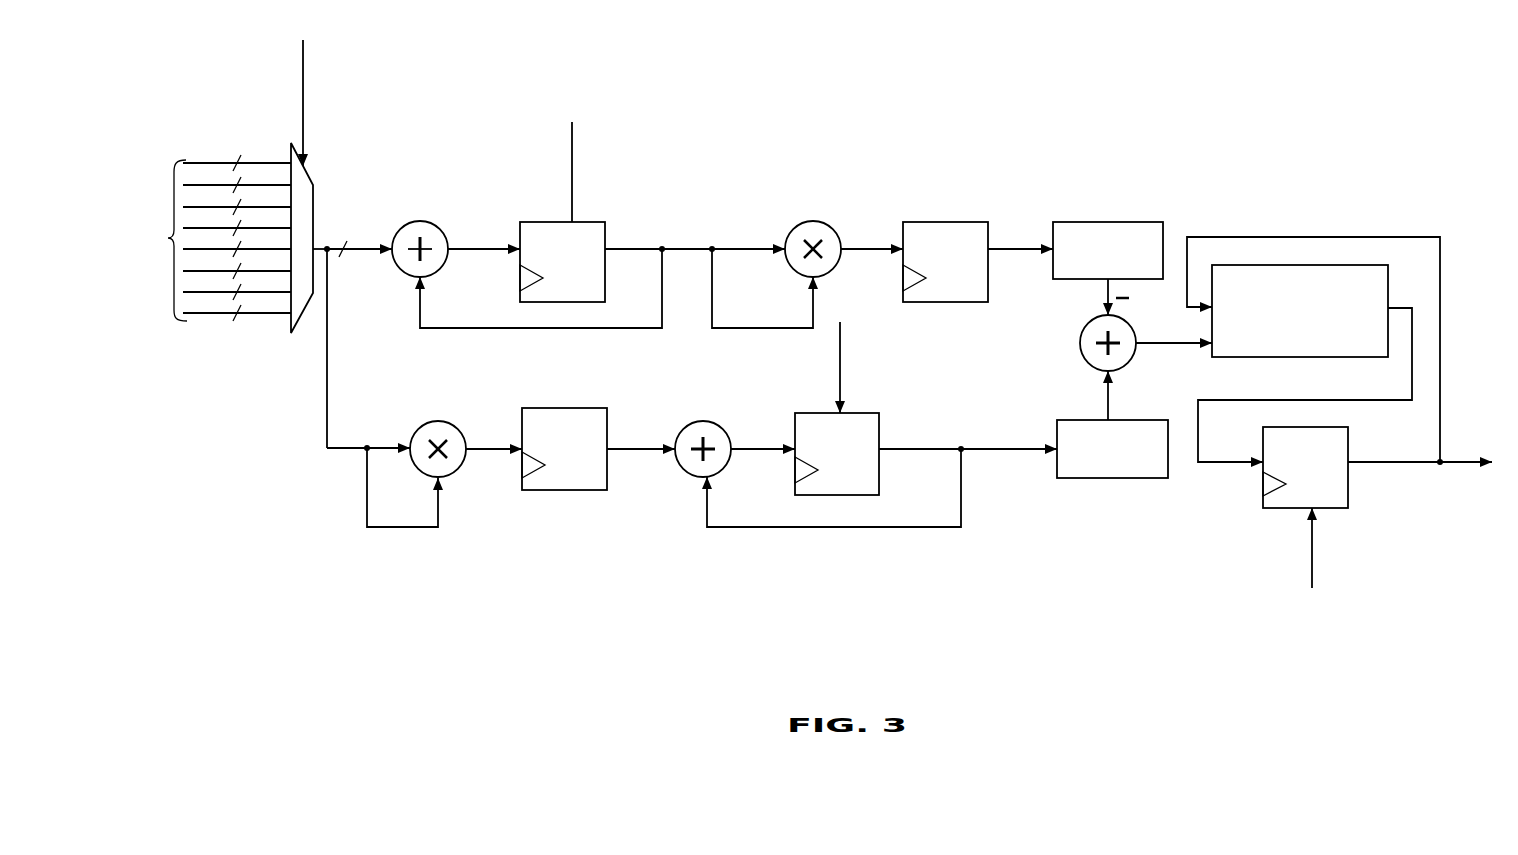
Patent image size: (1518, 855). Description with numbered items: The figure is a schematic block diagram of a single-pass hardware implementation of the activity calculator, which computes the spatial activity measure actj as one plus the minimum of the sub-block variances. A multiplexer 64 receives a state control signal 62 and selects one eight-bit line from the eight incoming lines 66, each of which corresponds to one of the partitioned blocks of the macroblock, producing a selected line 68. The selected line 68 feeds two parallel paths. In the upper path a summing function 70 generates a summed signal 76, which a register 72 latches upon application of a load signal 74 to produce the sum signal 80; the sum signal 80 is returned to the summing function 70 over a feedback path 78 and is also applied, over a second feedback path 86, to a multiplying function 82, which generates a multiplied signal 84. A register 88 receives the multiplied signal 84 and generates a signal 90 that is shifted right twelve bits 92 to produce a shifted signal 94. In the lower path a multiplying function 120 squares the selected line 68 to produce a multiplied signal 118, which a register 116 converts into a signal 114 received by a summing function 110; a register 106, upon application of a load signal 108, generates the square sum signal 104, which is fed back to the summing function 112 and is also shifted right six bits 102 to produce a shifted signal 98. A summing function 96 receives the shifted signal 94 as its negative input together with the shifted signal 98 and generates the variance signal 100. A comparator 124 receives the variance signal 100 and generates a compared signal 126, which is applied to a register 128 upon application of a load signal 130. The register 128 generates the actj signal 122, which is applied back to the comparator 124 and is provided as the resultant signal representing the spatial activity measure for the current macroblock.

The state control signal 62 is at (303, 80).
The multiplexer 64 is at (311, 176).
The incoming lines 66 is at (218, 232).
The selected line 68 is at (366, 248).
The summing function 70 is at (422, 222).
The register 72 is at (591, 222).
The load signal 74 is at (573, 131).
The summed signal 76 is at (475, 248).
The feedback line 78 is at (547, 329).
The sum signal 80 is at (733, 248).
The multiplying function 82 is at (814, 222).
The multiplied signal 84 is at (861, 248).
The multiplier feedback line 86 is at (782, 329).
The register 88 is at (968, 222).
The signal 90 is at (1004, 248).
The right shift by 12 bits 92 is at (1136, 222).
The shifted signal 94 is at (1107, 298).
The summing function 96 is at (1082, 340).
The shifted signal 98 is at (1107, 410).
The variance signal 100 is at (1153, 343).
The shifter ( 6) 102 is at (1095, 478).
The square sum signal 104 is at (993, 452).
The register 106 is at (880, 425).
The load signal 108 is at (840, 336).
The summing function 110 is at (745, 448).
The summing function 112 is at (692, 473).
The signal 114 is at (628, 449).
The register 116 is at (584, 408).
The multiplied signal 118 is at (502, 456).
The multiplying function 120 is at (434, 422).
The actj signal 122 is at (1289, 237).
The comparator 124 is at (1388, 292).
The compared signal 126 is at (1365, 400).
The register 128 is at (1348, 496).
The load signal 130 is at (1312, 557).